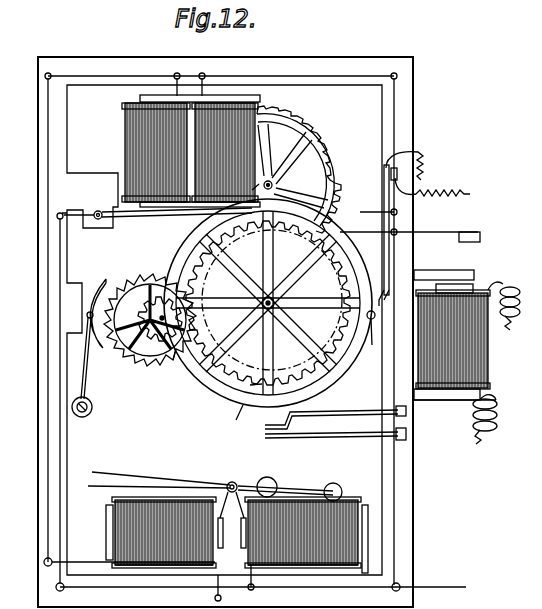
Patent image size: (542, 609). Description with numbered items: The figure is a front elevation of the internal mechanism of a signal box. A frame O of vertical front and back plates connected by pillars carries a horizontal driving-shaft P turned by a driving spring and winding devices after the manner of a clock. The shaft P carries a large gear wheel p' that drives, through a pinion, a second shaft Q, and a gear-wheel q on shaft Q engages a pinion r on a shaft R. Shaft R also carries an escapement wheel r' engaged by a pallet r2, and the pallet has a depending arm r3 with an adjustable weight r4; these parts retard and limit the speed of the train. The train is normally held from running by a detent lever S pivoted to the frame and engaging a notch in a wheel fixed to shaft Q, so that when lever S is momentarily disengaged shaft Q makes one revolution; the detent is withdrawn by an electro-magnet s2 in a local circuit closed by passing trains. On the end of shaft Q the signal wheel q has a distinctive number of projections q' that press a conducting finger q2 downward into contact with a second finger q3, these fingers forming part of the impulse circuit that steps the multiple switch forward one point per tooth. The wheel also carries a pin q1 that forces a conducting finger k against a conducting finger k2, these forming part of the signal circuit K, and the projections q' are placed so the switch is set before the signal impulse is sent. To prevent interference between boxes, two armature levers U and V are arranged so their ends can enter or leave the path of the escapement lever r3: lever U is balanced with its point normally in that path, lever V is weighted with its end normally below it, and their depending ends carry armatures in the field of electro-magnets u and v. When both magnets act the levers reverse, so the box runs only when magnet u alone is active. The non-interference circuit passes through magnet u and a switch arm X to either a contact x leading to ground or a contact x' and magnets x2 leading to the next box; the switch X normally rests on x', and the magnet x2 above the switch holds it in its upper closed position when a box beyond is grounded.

The frame O is at (38, 153).
The magnet x2 is at (181, 151).
The switch arm X is at (158, 221).
The driving-shaft P is at (274, 180).
The large gear wheel p' is at (307, 169).
The signal circuit K is at (428, 170).
The contact lever k is at (380, 235).
The contact x' is at (378, 218).
The contact x is at (410, 237).
The conducting finger k2 is at (395, 247).
The detent lever S is at (444, 268).
The electro-magnet s2 is at (467, 363).
The second shaft Q is at (268, 303).
The signal wheel q is at (268, 321).
The projections q' is at (387, 409).
The pivot q1 is at (379, 328).
The conducting finger q2 is at (399, 409).
The second finger q3 is at (403, 446).
The shaft R is at (150, 320).
The pinion r is at (160, 319).
The escapement wheel r' is at (173, 372).
The pallet r2 is at (106, 284).
The depending arm r3 is at (93, 358).
The adjustable weight r4 is at (92, 405).
The armature lever U is at (215, 500).
The armature lever V is at (222, 535).
The electro-magnet v is at (188, 566).
The electro-magnet u is at (306, 566).